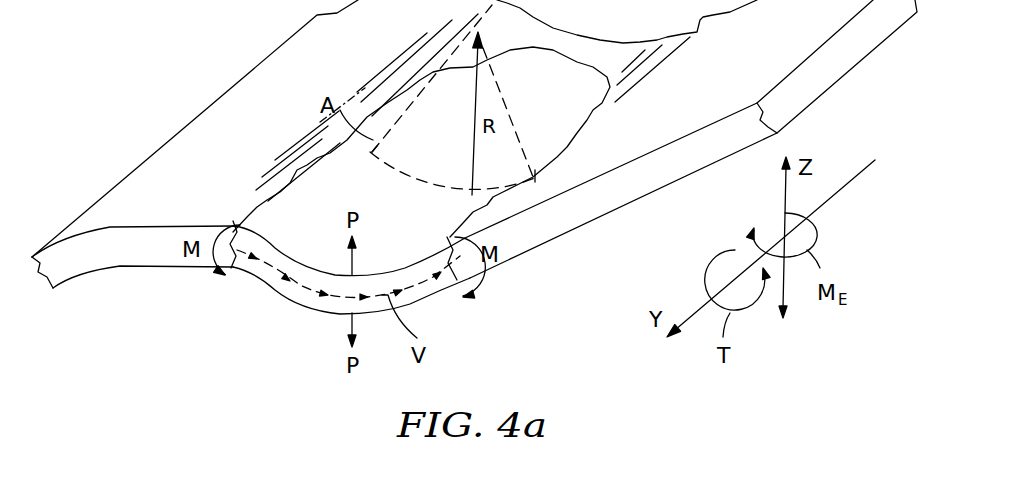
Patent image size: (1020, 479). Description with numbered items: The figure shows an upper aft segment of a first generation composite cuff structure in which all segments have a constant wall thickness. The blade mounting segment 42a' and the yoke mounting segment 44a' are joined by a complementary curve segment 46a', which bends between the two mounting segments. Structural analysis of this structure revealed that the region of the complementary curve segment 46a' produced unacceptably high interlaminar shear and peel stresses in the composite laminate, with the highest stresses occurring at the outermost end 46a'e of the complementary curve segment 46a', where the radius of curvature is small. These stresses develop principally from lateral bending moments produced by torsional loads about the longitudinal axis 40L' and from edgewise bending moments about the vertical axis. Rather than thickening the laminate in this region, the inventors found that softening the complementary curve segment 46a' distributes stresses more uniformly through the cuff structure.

The longitudinal axis 40L' is at (782, 248).
The blade mounting segment 42a' is at (691, 139).
The yoke mounting segment 44a' is at (132, 279).
The complementary curve segment 46a' is at (328, 282).
The outermost end of complementary curve segment 46a'e is at (406, 147).